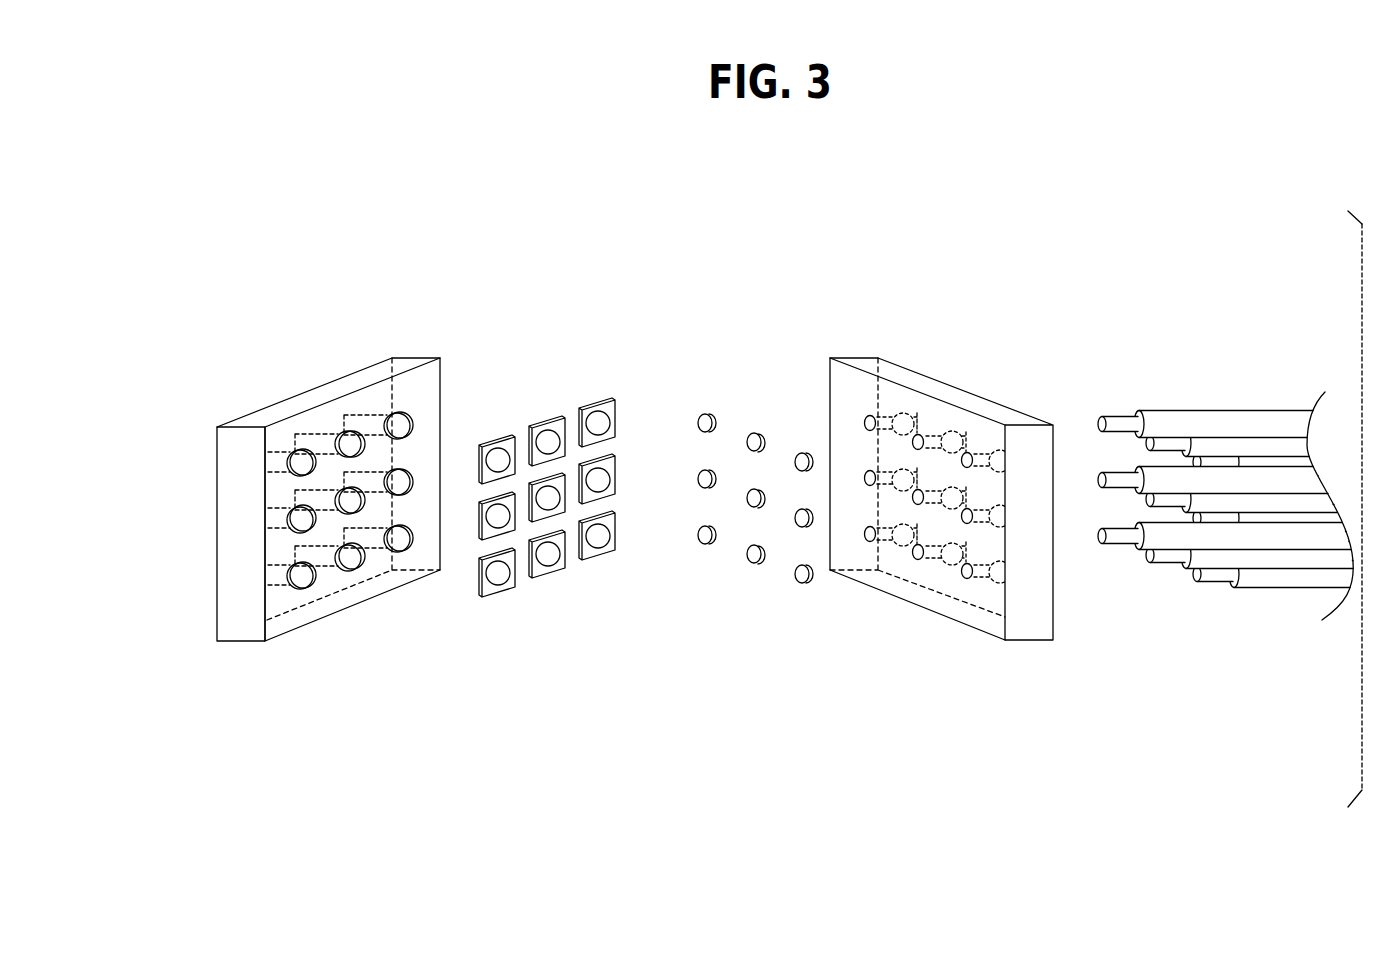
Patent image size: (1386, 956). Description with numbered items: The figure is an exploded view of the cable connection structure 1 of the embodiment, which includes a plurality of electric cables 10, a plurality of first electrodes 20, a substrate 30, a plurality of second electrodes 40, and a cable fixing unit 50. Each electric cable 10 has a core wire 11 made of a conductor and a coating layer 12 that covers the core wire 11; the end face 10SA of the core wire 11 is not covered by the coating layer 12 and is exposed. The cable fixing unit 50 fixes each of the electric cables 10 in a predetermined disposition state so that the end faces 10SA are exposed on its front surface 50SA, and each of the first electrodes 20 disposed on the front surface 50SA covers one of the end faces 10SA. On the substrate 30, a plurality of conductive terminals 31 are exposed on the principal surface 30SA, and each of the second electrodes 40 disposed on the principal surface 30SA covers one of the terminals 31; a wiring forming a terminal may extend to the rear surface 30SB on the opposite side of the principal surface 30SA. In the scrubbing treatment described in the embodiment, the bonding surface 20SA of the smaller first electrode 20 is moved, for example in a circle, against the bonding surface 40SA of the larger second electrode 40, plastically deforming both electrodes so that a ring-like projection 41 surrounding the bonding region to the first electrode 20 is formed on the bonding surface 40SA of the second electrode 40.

The cable connection structure 1 is at (963, 217).
The electric cable 10 is at (1190, 357).
The core wire 11 is at (1117, 415).
The coating layer 12 is at (1169, 410).
The end face 10SA is at (1195, 573).
The first electrode 20 is at (753, 432).
The bonding surface 20SA is at (797, 571).
The substrate 30 is at (360, 370).
The terminal 31 is at (412, 413).
The principal surface 30SA is at (360, 602).
The rear surface 30SB is at (216, 609).
The second electrode 40 is at (605, 400).
The ring-like projection 41 is at (583, 410).
The bonding surface 40SA is at (503, 575).
The cable fixing unit 50 is at (900, 365).
The front surface 50SA is at (918, 598).